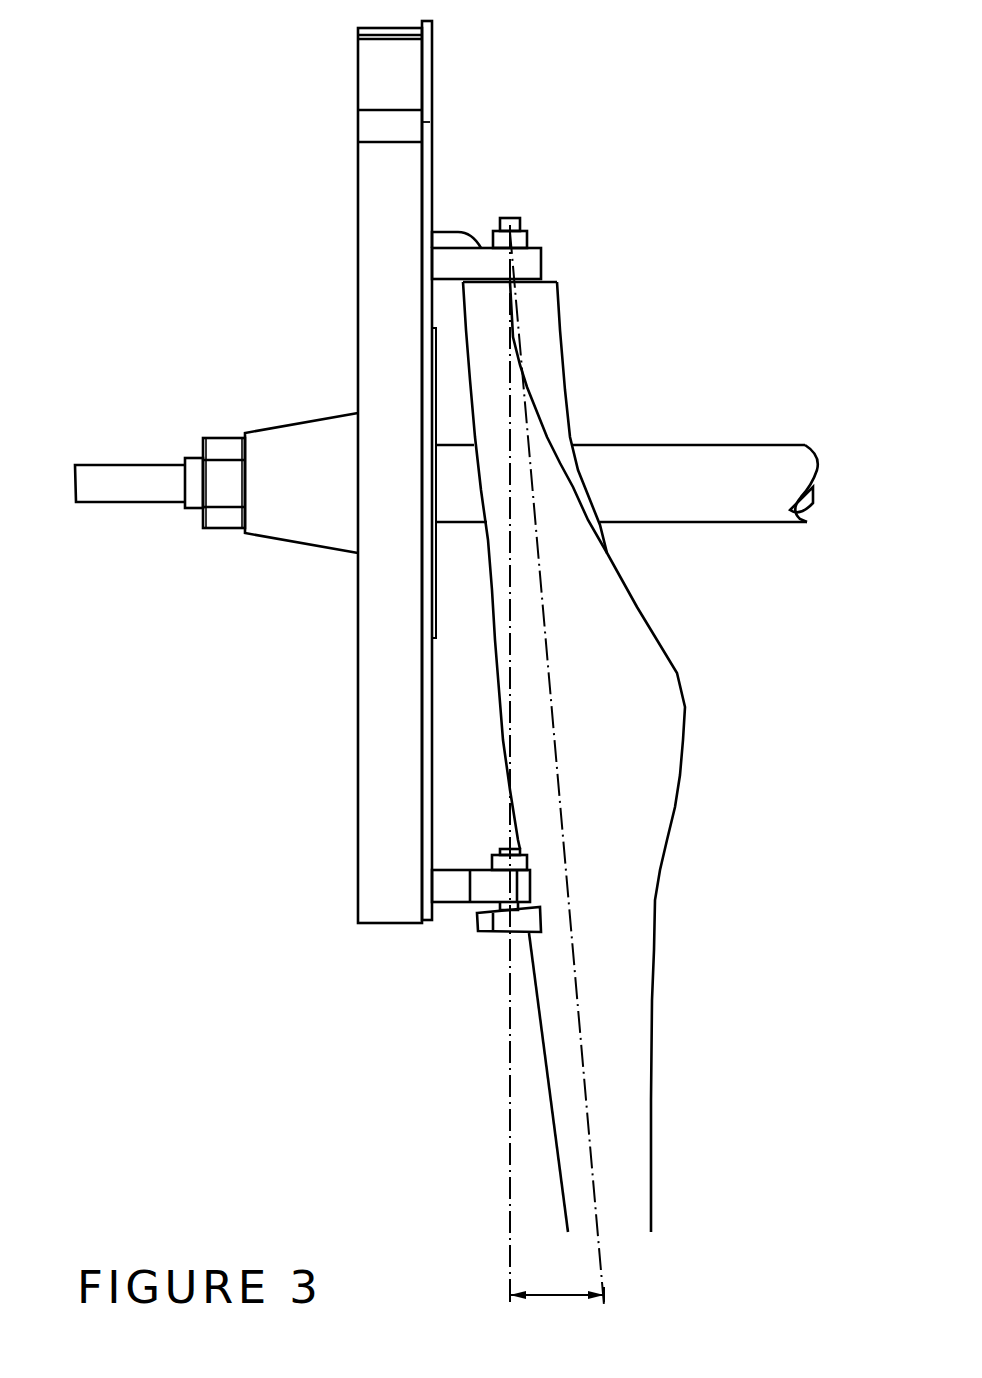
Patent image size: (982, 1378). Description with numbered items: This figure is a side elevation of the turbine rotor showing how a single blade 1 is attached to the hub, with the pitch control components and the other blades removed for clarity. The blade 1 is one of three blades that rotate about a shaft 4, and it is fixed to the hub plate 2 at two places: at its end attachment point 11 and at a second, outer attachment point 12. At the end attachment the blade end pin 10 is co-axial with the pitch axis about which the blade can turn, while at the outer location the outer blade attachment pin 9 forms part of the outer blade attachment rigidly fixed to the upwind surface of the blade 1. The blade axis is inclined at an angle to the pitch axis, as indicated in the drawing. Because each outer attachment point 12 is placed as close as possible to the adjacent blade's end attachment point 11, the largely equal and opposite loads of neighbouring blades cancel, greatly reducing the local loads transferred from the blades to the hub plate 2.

The blade 1 is at (665, 840).
The hub plate 2 is at (358, 278).
The shaft 4 is at (690, 445).
The outer blade attachment pin 9 is at (498, 845).
The blade end pin 10 is at (520, 218).
The blade end attachment point 11 is at (541, 265).
The outer blade attachment point 12 is at (462, 902).